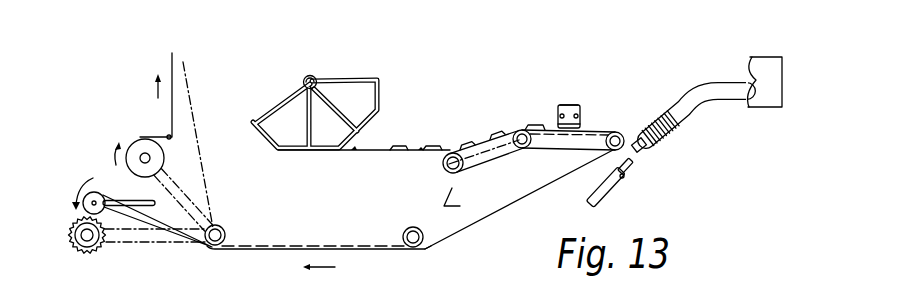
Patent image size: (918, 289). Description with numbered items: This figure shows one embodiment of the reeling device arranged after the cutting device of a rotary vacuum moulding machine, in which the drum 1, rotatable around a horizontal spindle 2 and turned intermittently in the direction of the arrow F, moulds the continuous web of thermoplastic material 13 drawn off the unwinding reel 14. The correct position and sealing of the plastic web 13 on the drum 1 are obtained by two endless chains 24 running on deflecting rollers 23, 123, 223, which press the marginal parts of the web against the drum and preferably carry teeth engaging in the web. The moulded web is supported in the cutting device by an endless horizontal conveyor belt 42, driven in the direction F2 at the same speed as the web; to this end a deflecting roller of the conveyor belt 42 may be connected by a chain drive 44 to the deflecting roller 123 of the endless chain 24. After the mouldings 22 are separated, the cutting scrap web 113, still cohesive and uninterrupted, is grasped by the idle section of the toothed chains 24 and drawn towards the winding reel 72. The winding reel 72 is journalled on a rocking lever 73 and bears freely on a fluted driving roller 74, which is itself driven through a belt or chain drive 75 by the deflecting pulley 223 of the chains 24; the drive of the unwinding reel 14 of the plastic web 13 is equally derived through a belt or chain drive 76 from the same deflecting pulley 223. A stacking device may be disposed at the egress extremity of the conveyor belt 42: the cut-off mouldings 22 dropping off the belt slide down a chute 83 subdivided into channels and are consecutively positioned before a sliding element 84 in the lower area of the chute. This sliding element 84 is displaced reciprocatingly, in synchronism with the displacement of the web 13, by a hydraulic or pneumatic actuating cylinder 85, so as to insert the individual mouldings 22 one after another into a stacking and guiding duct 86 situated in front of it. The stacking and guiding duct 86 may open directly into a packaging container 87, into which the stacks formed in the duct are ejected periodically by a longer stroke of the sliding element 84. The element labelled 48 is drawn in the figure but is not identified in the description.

The drum 1 is at (386, 81).
The horizontal spindle 2 is at (306, 79).
The direction of rotation of the drum F is at (265, 110).
The direction of conveyor belt drive F2 is at (431, 130).
The web of thermoplastic material 13 is at (172, 60).
The unwinding reel 14 is at (136, 140).
The mouldings 22 is at (373, 147).
The deflecting roller 23 is at (412, 227).
The endless chains 24 is at (465, 200).
The conveyor belt 42 is at (560, 152).
The chain drive 44 is at (483, 157).
The carriage 48 is at (566, 101).
The winding reel 72 is at (142, 198).
The rocking lever 73 is at (135, 202).
The fluted driving roller 74 is at (100, 250).
The belt or chain drive 75 is at (173, 246).
The belt or chain drive 76 is at (186, 195).
The chute 83 is at (638, 138).
The sliding element 84 is at (648, 156).
The actuating cylinder 85 is at (617, 181).
The stacking and guiding duct 86 is at (688, 117).
The packaging container 87 is at (752, 55).
The cutting scrap web 113 is at (494, 218).
The deflecting roller 123 is at (446, 169).
The deflecting pulley 223 is at (226, 229).